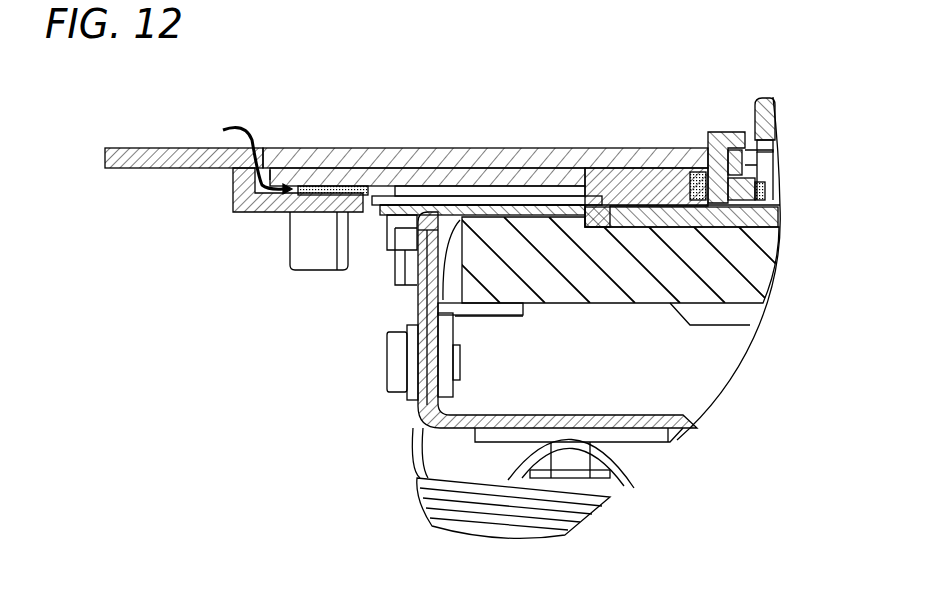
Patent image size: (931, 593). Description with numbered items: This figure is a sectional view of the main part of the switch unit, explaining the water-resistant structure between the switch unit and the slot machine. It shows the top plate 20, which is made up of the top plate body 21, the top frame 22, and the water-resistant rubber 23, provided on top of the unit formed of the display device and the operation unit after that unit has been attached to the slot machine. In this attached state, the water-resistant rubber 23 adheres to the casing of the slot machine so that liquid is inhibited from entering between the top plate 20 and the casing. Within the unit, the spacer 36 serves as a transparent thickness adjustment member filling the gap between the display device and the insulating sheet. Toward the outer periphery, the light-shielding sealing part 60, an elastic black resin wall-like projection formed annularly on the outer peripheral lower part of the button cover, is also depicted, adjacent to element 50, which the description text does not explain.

The top plate 20 is at (485, 140).
The top plate body 21 is at (457, 160).
The top frame 22 is at (398, 178).
The water-resistant rubber 23 is at (338, 186).
The spacer 36 is at (770, 215).
The bezel 50 is at (756, 95).
The light-shielding sealing part 60 is at (698, 172).